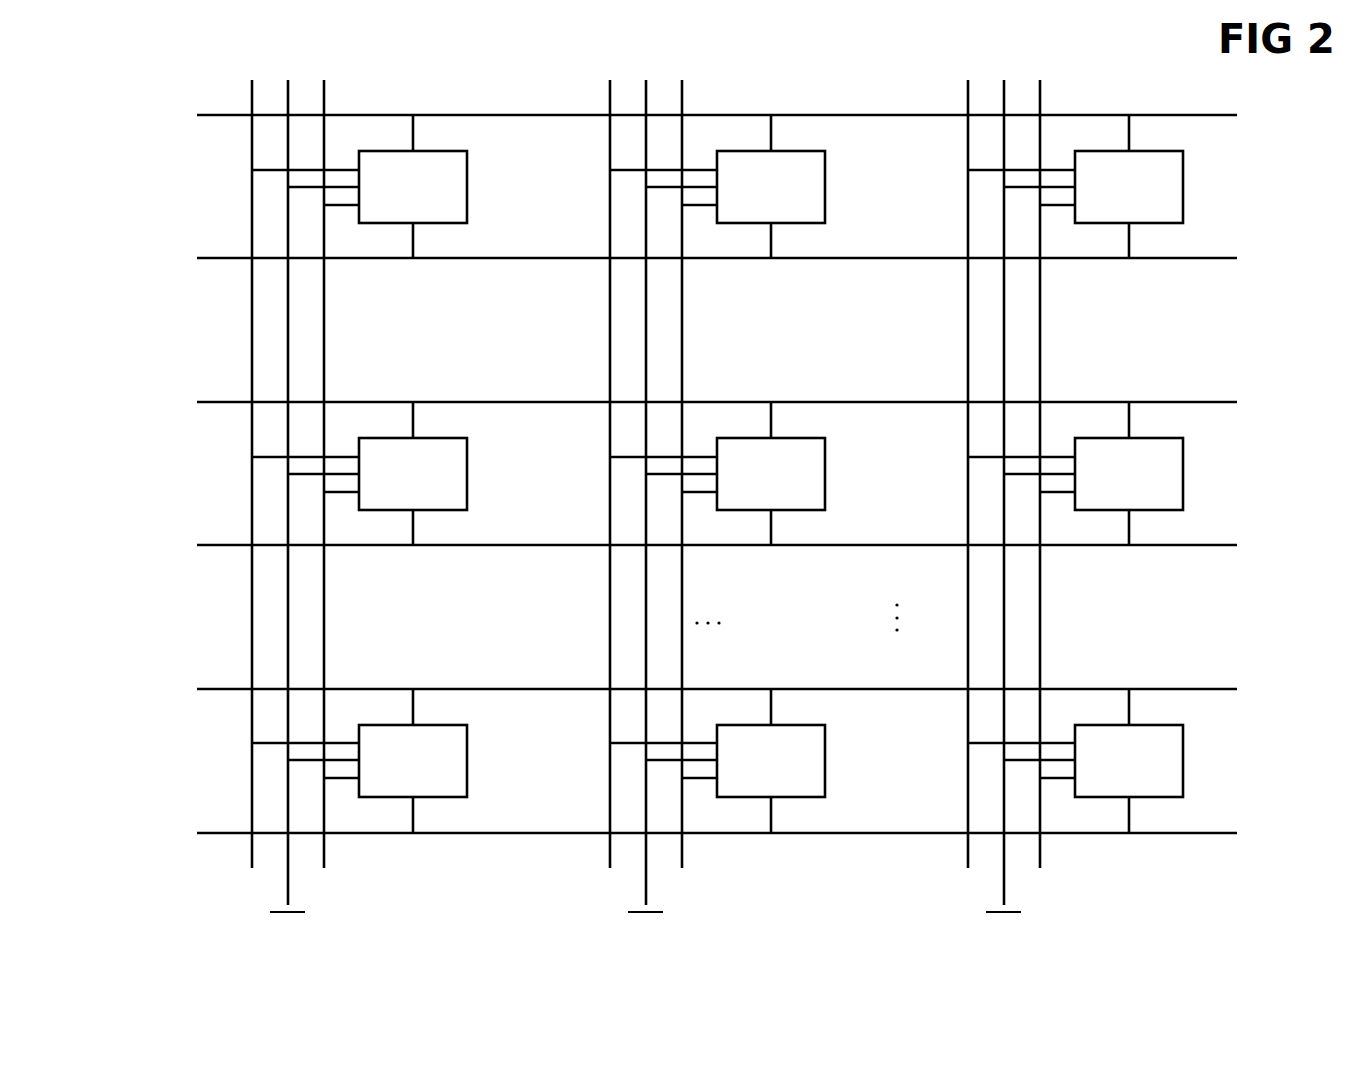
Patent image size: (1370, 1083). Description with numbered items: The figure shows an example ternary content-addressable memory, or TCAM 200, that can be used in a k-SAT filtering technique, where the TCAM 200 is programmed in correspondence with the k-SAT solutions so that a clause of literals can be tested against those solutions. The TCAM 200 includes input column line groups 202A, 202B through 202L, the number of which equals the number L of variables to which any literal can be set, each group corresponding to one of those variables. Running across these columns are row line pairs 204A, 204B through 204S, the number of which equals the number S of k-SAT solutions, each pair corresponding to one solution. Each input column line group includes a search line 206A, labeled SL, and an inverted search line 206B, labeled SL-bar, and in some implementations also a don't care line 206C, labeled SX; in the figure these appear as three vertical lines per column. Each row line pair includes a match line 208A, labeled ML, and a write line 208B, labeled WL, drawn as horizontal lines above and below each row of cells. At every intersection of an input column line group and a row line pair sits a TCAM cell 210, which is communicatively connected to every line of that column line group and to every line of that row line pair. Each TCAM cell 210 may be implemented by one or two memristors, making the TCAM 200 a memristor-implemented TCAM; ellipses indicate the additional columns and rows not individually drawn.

The ternary content-addressable memory (TCAM) 200 is at (146, 88).
The input column line group 202A is at (233, 93).
The input column line group 202B is at (591, 93).
The input column line group 202L is at (949, 93).
The row line pair 204A is at (1237, 97).
The row line pair 204B is at (1237, 384).
The row line pair 204S is at (1237, 672).
The search line 206A is at (252, 857).
The inverted search line 206B is at (288, 905).
The don't care line 206C is at (324, 851).
The match line 208A is at (213, 118).
The write line 208B is at (213, 261).
The TCAM cell 210 is at (467, 190).